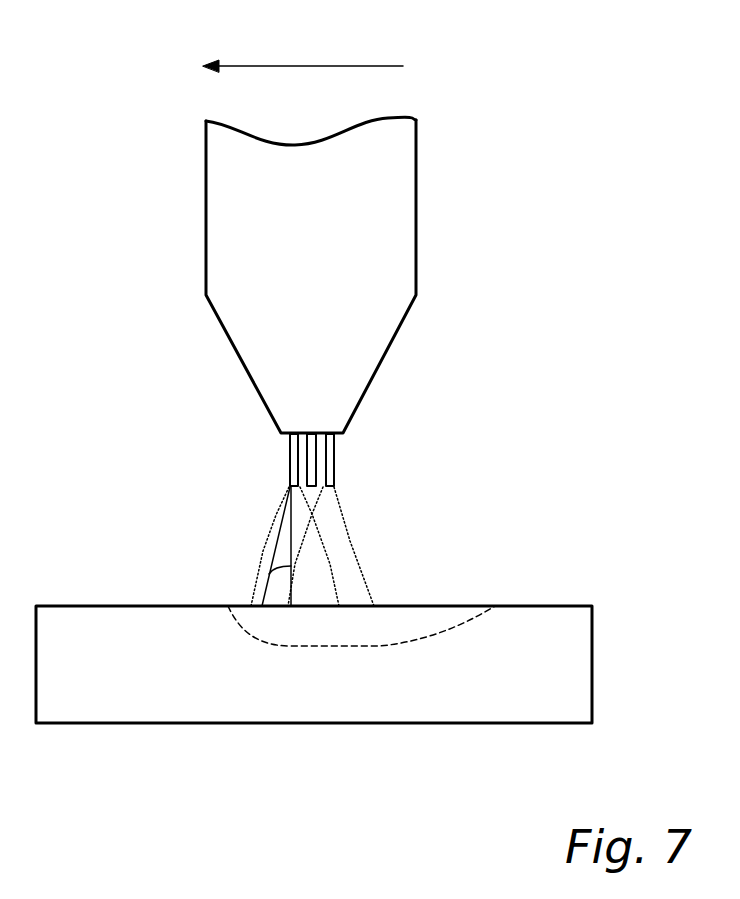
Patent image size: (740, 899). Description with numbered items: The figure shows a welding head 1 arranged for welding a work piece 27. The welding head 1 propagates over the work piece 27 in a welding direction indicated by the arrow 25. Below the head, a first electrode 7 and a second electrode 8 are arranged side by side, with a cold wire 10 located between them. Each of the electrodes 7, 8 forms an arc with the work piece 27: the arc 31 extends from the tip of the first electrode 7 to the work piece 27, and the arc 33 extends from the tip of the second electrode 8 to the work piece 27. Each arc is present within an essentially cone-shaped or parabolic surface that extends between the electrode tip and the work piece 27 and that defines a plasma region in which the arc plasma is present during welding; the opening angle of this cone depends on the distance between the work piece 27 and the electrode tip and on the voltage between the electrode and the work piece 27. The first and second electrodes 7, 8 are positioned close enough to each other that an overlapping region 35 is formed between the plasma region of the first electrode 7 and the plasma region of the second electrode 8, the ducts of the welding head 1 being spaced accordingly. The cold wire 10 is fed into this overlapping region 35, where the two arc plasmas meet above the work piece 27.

The welding head 1 is at (477, 199).
The arrow 25 is at (301, 49).
The first electrode 7 is at (290, 464).
The cold wire 10 is at (316, 452).
The second electrode 8 is at (334, 473).
The arc 31 is at (270, 547).
The overlapping region 35 is at (312, 549).
The arc 33 is at (355, 582).
The work piece 27 is at (314, 664).